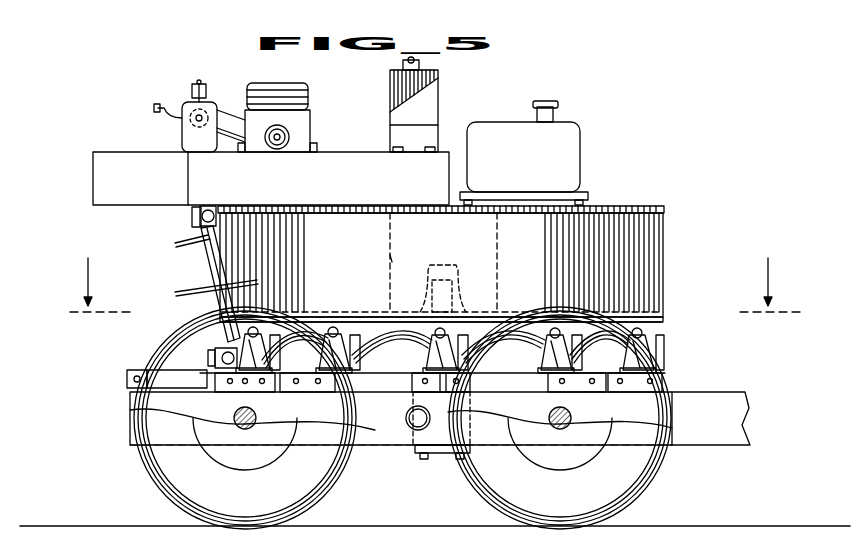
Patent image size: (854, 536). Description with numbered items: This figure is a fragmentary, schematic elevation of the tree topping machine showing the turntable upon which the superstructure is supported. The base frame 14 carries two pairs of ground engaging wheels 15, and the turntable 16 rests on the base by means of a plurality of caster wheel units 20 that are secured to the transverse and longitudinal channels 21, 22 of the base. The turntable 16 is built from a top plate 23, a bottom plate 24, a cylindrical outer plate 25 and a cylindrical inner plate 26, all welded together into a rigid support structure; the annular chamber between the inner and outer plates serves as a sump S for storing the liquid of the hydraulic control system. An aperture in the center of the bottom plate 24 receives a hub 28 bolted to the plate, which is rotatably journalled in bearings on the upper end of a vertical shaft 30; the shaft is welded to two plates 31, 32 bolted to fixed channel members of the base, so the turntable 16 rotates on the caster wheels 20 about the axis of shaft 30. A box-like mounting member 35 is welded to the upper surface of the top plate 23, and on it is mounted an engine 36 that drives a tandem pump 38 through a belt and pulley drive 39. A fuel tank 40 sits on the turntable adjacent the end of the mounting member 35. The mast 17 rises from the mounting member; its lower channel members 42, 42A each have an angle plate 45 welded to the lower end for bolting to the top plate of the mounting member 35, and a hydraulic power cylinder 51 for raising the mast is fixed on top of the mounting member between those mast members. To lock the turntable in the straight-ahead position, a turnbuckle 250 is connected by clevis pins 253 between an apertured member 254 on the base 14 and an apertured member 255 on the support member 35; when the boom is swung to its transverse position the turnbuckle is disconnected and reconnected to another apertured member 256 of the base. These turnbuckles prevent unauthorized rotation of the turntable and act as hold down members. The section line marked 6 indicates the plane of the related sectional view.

The base frame 14 is at (394, 442).
The ground engaging wheels 15 is at (196, 312).
The turntable 16 is at (478, 239).
The mast 17 is at (417, 104).
The caster wheel units 20 is at (352, 332).
The transverse channels 21 is at (272, 392).
The longitudinal channels 22 is at (320, 386).
The top plate 23 is at (632, 205).
The bottom plate 24 is at (313, 318).
The cylindrical outer plate 25 is at (356, 243).
The cylindrical inner plate 26 is at (390, 259).
The hub 28 is at (432, 262).
The vertical shaft 30 is at (450, 290).
The plate 31 is at (412, 374).
The plate 32 is at (442, 458).
The mounting member 35 is at (128, 178).
The engine 36 is at (270, 84).
The tandem pump 38 is at (182, 108).
The belt and pulley drive 39 is at (232, 112).
The fuel tank 40 is at (527, 167).
The lower channel member 42 is at (428, 108).
The lower channel member 42A is at (392, 82).
The angle plate 45 is at (398, 135).
The hydraulic power cylinder 51 is at (412, 84).
The turnbuckle 250 is at (208, 262).
The clevis pins 253 is at (192, 216).
The apertured members 254 is at (218, 382).
The apertured members 255 is at (205, 208).
The apertured members 256 is at (127, 379).
The section line 6- 6 is at (433, 285).
The sump S is at (618, 255).